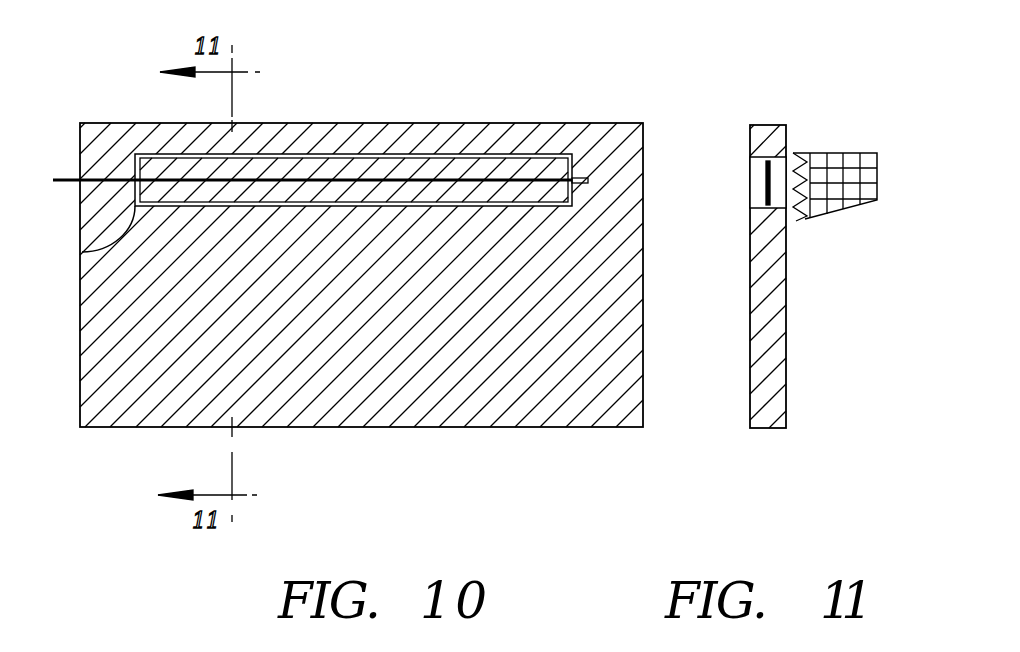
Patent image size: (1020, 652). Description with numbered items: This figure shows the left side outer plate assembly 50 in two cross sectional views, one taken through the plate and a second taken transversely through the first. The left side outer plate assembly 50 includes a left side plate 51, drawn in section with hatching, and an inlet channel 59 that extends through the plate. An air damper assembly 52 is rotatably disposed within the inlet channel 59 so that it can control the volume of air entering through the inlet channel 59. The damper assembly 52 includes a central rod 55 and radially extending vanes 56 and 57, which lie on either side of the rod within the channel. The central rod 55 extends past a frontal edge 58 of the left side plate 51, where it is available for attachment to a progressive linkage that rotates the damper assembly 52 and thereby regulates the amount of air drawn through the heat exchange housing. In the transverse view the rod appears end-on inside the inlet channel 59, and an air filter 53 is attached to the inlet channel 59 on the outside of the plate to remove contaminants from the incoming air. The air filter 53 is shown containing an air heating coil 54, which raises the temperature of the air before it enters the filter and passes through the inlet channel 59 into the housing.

In FIG. 10, the left side outer plate assembly 50 is at (352, 244).
In FIG. 11, the left side plate 51 is at (768, 367).
In FIG. 10, the air damper assembly 52 is at (157, 168).
In FIG. 11, the air damper assembly 52 is at (764, 190).
In FIG. 11, the air filter 53 is at (877, 173).
In FIG. 11, the air heating coil 54 is at (805, 218).
In FIG. 10, the central rod 55 is at (53, 180).
In FIG. 10, the radially extending vane 56 is at (560, 168).
In FIG. 10, the radially extending vane 57 is at (557, 195).
In FIG. 10, the frontal edge 58 is at (80, 314).
In FIG. 10, the inlet channel 59 is at (82, 252).
In FIG. 11, the inlet channel 59 is at (773, 172).